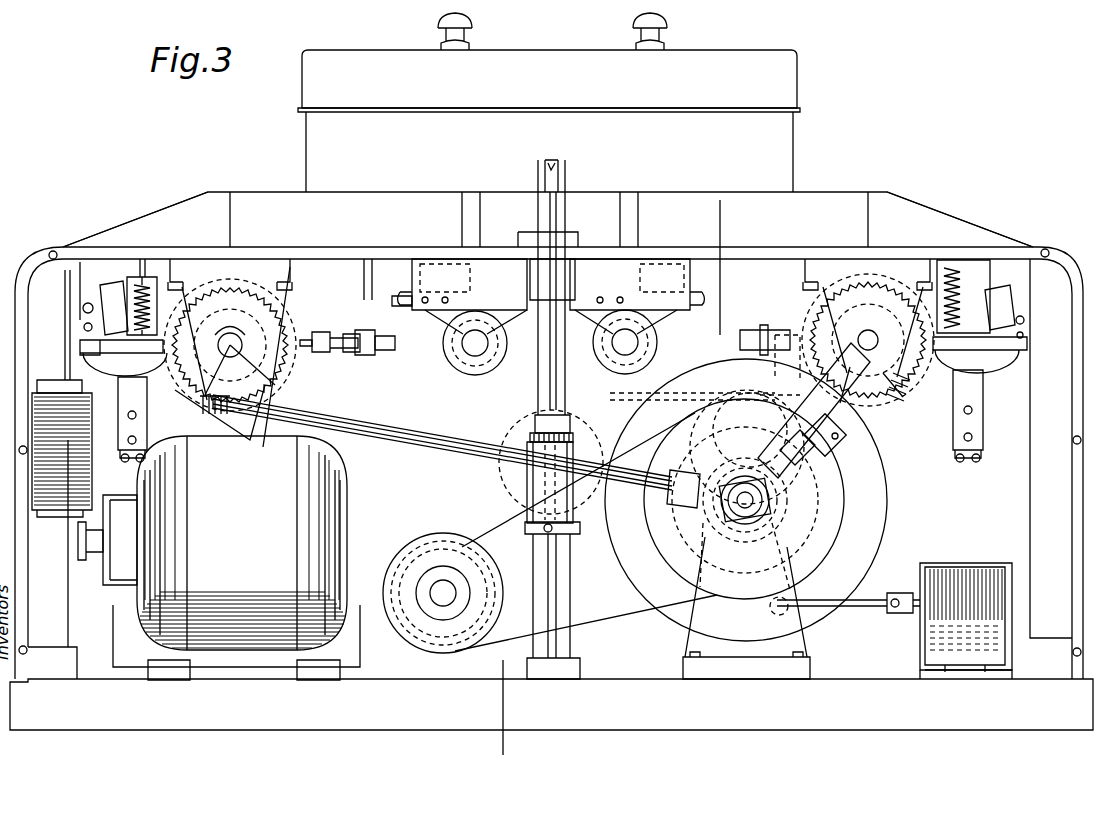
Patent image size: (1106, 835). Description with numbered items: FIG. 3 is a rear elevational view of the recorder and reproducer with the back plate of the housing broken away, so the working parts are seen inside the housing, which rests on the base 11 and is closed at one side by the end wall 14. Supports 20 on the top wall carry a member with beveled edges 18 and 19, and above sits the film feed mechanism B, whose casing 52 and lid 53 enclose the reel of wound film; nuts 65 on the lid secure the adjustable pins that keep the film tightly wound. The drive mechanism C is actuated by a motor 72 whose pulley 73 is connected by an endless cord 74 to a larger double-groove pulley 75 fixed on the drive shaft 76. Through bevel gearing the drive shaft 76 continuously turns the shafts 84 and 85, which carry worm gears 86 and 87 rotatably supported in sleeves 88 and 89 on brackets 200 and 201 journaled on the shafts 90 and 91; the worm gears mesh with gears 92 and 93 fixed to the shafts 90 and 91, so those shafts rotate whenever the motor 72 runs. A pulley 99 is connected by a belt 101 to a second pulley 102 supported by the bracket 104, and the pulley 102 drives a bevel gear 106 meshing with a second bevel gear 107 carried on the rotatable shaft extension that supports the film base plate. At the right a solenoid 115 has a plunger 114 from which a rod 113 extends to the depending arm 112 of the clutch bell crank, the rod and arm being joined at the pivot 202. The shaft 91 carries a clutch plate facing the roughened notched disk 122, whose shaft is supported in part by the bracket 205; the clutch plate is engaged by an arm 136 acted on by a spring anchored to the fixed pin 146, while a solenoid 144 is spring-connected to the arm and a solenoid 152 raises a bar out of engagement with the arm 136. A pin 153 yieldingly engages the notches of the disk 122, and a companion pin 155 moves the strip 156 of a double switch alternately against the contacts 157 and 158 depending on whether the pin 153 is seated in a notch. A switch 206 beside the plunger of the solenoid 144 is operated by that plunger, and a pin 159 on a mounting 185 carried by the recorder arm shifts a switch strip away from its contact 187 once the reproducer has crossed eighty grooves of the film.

The base 11 is at (736, 214).
The end wall 14 is at (1075, 392).
The beveled edge 18 is at (150, 213).
The beveled edge 19 is at (948, 207).
The supports 20 is at (232, 216).
The casing 52 is at (795, 150).
The lid 53 is at (778, 50).
The nuts 65 is at (472, 46).
The feed mechanism B is at (798, 92).
The motor 72 is at (338, 466).
The pulley 73 is at (413, 640).
The endless cord 74 is at (630, 614).
The pulley 75 is at (845, 503).
The drive shaft 76 is at (718, 508).
The shaft 84 is at (848, 440).
The shaft 85 is at (385, 430).
The worm gear 86 is at (875, 400).
The worm gear 87 is at (205, 413).
The sleeve 88 is at (860, 410).
The sleeve 89 is at (272, 420).
The shaft 90 is at (868, 330).
The shaft 91 is at (230, 338).
The gear 92 is at (262, 330).
The gear 93 is at (908, 385).
The pulley 99 is at (720, 400).
The belt 101 is at (560, 372).
The pulley 102 is at (530, 437).
The bracket 104 is at (527, 492).
The bevel gear 106 is at (500, 470).
The bevel gear 107 is at (535, 418).
The depending arm 112 is at (810, 553).
The rod 113 is at (870, 608).
The plunger 114 is at (898, 593).
The solenoid 115 is at (962, 572).
The notched disk 122 is at (150, 400).
The arm 136 is at (80, 346).
The solenoid 144 is at (80, 352).
The fixed pin 146 is at (95, 290).
The solenoid 152 is at (135, 290).
The pin 153 is at (392, 302).
The pin 155 is at (345, 355).
The strip 156 is at (372, 332).
The contact 157 is at (390, 342).
The contact 158 is at (335, 355).
The pin 159 is at (500, 320).
The mounting 185 is at (492, 360).
The contact 187 is at (466, 300).
The bracket 200 is at (262, 385).
The bracket 201 is at (800, 375).
The pivot 202 is at (762, 612).
The bracket 205 is at (658, 335).
The switch 206 is at (122, 440).
The drive mechanism C is at (861, 488).